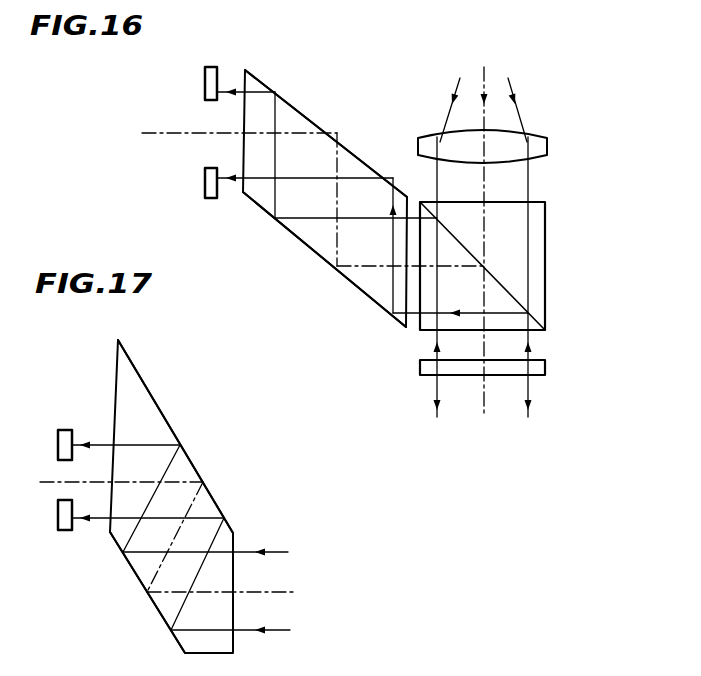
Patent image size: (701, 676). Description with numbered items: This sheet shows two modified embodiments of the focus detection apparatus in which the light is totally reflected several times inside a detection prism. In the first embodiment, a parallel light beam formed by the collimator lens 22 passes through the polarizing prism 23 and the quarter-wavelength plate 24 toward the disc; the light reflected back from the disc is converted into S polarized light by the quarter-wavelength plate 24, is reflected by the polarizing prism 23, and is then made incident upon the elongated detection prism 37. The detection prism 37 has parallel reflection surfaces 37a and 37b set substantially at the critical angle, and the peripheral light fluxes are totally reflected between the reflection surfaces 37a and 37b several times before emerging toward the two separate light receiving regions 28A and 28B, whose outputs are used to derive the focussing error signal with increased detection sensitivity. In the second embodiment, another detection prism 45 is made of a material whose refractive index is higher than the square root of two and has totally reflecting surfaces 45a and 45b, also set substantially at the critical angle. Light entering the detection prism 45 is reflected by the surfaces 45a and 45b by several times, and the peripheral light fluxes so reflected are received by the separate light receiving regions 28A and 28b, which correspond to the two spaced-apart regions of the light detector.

In FIG. 16, the collimator lens 22 is at (545, 138).
In FIG. 16, the polarizing prism 23 is at (545, 243).
In FIG. 16, the quarter-wavelength plate 24 is at (535, 360).
In FIG. 16, the light receiving region 28A is at (205, 81).
In FIG. 17, the light receiving region 28A is at (56, 430).
In FIG. 16, the light receiving region 28B is at (205, 178).
In FIG. 17, the light receiving region 28b is at (58, 531).
In FIG. 16, the detection prism 37 is at (308, 233).
In FIG. 16, the reflection surface 37a is at (356, 283).
In FIG. 16, the reflection surface 37b is at (348, 152).
In FIG. 17, the detection prism 45 is at (145, 567).
In FIG. 17, the totally reflecting surface 45a is at (168, 607).
In FIG. 17, the totally reflecting surface 45b is at (152, 407).